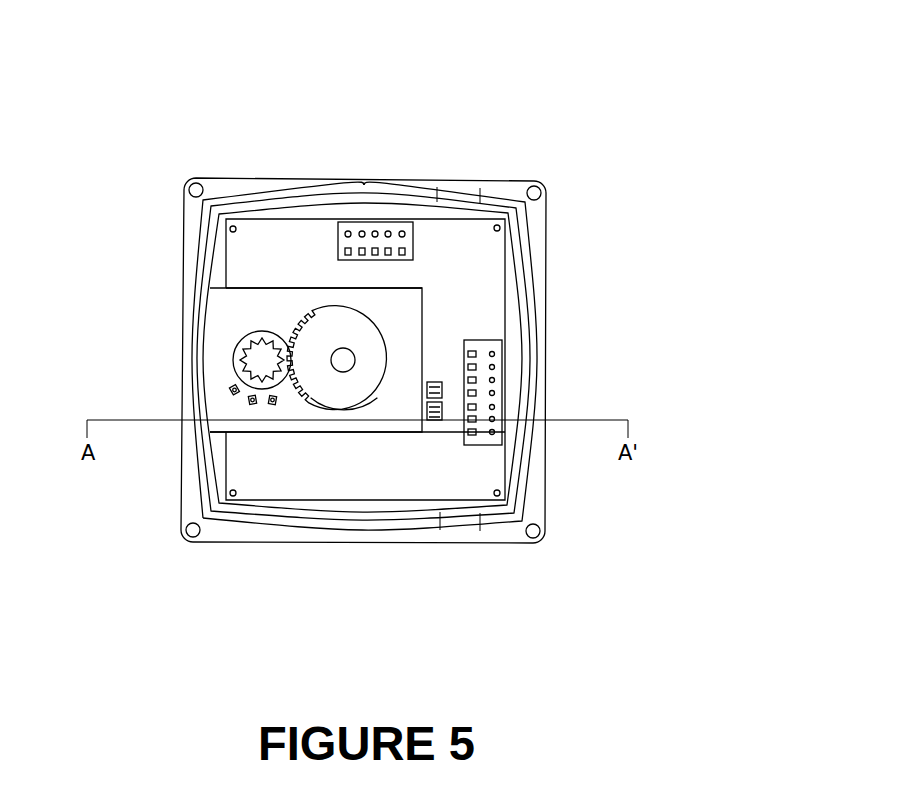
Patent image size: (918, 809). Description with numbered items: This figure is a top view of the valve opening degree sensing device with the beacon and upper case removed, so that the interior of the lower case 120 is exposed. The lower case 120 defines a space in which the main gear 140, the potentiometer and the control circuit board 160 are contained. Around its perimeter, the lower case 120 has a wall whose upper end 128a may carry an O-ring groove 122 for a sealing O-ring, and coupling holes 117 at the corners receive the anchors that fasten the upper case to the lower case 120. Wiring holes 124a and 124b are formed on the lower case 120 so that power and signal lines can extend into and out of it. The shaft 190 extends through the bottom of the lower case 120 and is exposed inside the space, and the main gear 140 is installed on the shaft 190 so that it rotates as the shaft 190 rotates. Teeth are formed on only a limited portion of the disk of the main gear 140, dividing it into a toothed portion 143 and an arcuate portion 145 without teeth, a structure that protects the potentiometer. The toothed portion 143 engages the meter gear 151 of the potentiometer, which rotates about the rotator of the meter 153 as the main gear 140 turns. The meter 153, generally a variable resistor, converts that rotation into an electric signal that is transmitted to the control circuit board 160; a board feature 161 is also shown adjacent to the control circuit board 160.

The coupling holes 117 is at (540, 182).
The lower case 120 is at (541, 288).
The O-ring groove 122 is at (537, 339).
The wiring hole 124a is at (461, 192).
The wiring hole 124b is at (463, 530).
The upper end of the wall 128a is at (194, 264).
The main gear 140 is at (316, 417).
The toothed portion 143 is at (295, 332).
The arcuate portion 145 is at (352, 411).
The meter gear 151 is at (238, 357).
The meter 153 is at (235, 388).
The control circuit board 160 is at (497, 254).
The mounting hole 161 is at (498, 228).
The shaft 190 is at (345, 356).